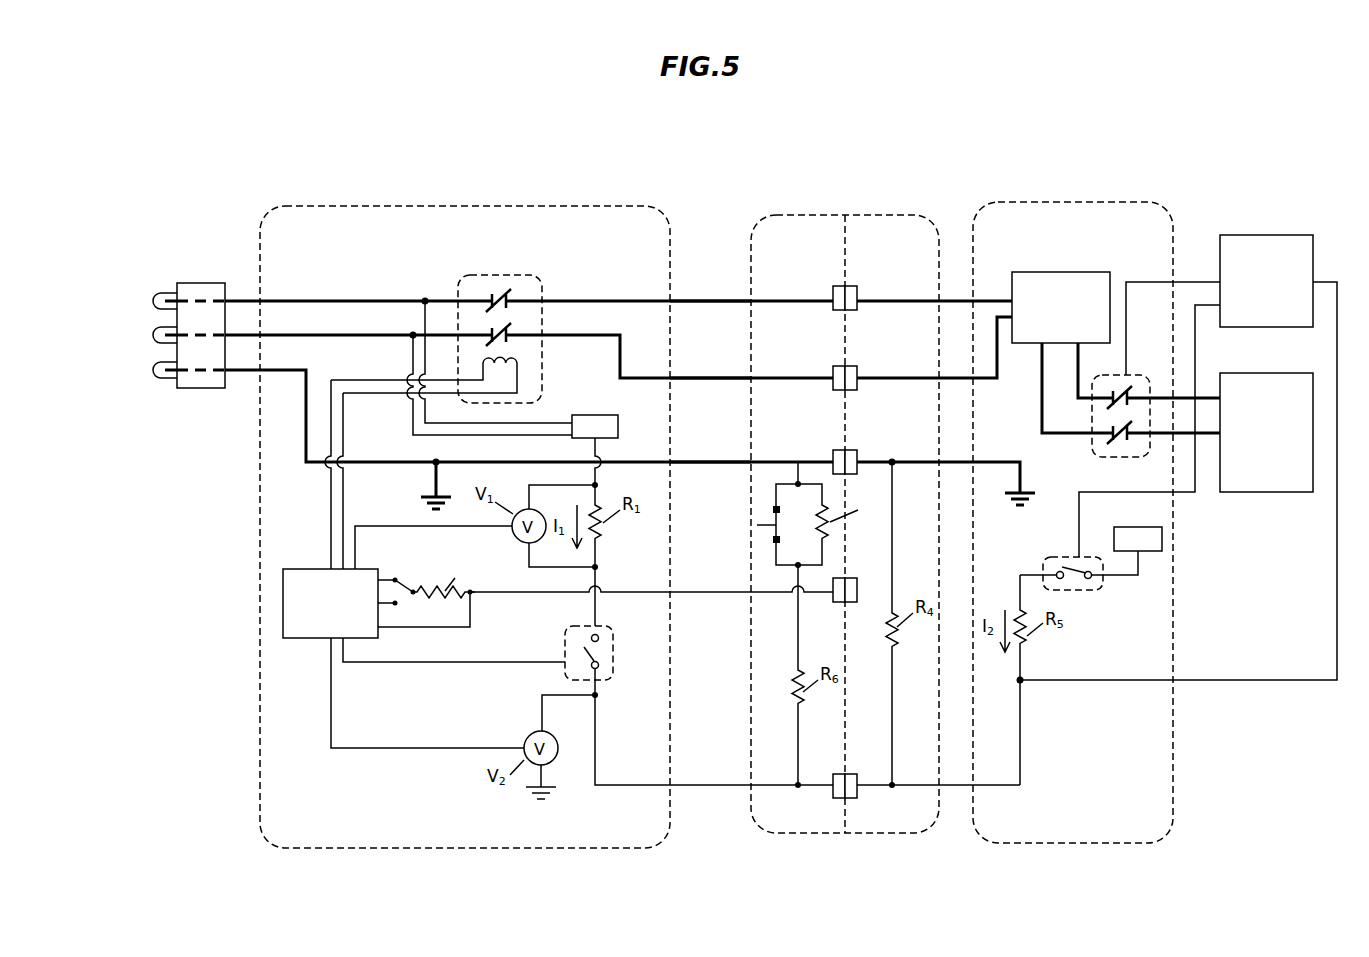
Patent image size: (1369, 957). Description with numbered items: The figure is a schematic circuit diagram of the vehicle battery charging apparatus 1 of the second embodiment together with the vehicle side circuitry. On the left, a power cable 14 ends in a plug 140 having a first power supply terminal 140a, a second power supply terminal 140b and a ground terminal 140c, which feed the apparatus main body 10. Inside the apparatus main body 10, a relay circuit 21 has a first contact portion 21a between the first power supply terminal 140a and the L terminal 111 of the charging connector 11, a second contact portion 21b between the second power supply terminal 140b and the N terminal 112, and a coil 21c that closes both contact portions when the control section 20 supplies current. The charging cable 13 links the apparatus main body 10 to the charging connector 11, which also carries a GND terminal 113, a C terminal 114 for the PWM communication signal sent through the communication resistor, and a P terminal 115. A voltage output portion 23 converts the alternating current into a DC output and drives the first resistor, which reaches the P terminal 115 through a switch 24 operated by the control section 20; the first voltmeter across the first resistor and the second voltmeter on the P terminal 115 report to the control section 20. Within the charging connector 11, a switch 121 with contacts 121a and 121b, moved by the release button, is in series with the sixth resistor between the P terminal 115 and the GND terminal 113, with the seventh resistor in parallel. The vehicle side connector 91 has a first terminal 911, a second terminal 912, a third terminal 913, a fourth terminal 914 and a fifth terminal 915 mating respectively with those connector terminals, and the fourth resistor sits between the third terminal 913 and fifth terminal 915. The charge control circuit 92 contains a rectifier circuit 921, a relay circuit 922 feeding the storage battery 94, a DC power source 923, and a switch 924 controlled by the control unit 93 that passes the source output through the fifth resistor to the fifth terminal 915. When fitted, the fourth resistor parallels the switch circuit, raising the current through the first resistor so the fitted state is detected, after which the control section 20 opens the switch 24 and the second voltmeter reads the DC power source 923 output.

The vehicle battery charging apparatus 1 is at (299, 179).
The power cable 14 is at (224, 257).
The plug 140 is at (190, 282).
The first power supply terminal 140a is at (166, 296).
The second power supply terminal 140b is at (166, 332).
The ground terminal 140c is at (166, 366).
The apparatus main body 10 is at (576, 206).
The charging cable 13 is at (695, 219).
The relay circuit 21 is at (488, 274).
The first contact portion 21a is at (532, 281).
The second contact portion 21b is at (527, 324).
The coil 21c is at (521, 364).
The voltage output portion 23 is at (618, 421).
The control section 20 is at (313, 568).
The switch 24 is at (616, 649).
The charging connector 11 is at (786, 213).
The vehicle side connector 91 is at (886, 213).
The L terminal 111 is at (833, 285).
The N terminal 112 is at (833, 367).
The GND terminal 113 is at (833, 448).
The C terminal 114 is at (839, 601).
The P terminal 115 is at (833, 798).
The first terminal 911 is at (857, 285).
The second terminal 912 is at (857, 367).
The third terminal 913 is at (857, 448).
The fourth terminal 914 is at (856, 577).
The fifth terminal 915 is at (857, 798).
The switch 121 is at (761, 556).
The contact 121a is at (772, 508).
The contact 121b is at (772, 539).
The charge control circuit 92 is at (1130, 202).
The rectifier circuit 921 is at (1085, 271).
The relay circuit 922 is at (1090, 455).
The DC power source 923 is at (1132, 526).
The switch 924 is at (1065, 555).
The control unit 93 is at (1284, 235).
The storage battery 94 is at (1284, 373).